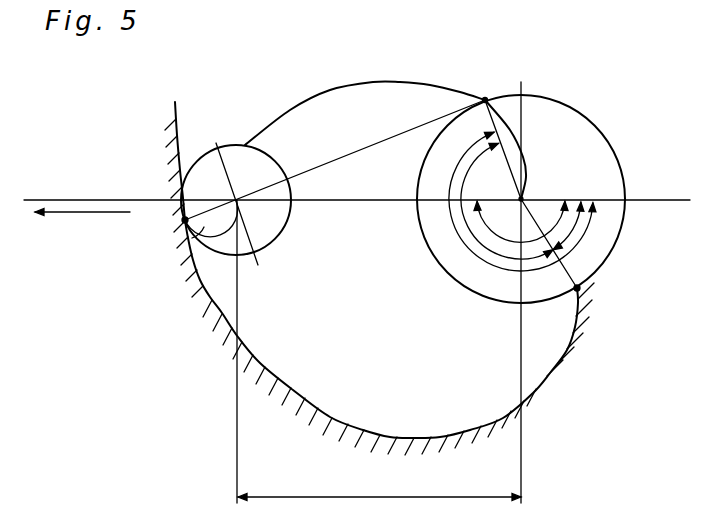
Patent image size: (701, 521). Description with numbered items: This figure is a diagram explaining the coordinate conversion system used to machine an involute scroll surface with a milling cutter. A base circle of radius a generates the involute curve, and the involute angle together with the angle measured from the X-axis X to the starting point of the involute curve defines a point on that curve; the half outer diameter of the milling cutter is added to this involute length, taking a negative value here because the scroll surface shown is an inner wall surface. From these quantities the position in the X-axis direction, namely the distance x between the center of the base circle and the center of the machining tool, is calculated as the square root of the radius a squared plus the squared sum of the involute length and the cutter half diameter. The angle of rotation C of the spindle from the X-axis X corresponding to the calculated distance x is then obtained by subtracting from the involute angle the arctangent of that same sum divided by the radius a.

The radius of the base circle a is at (525, 157).
The angle of rotation of the spindle C is at (502, 243).
The X-axis X is at (82, 225).
The distance between the center of the base circle and the center of the machining t x is at (379, 488).